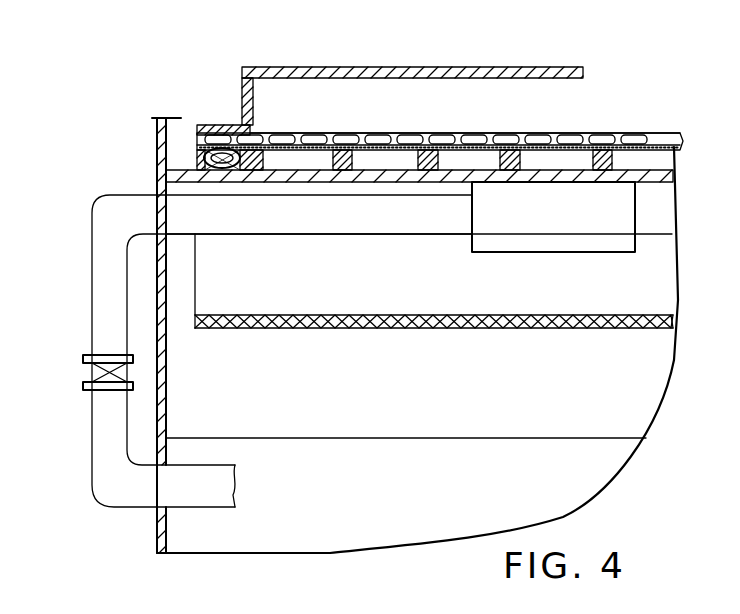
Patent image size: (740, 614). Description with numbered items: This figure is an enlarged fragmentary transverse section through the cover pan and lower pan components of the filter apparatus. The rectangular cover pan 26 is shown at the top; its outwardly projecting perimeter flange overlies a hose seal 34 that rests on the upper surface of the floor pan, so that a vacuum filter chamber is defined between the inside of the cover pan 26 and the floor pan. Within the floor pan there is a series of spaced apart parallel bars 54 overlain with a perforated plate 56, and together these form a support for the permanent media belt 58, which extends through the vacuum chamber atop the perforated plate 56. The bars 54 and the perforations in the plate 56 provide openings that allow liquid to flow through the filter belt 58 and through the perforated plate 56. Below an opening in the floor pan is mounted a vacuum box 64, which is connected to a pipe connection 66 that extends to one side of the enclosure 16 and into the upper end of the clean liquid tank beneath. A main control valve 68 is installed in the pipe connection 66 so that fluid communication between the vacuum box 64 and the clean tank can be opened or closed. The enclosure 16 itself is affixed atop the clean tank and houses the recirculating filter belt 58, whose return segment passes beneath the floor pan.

The enclosure 16 is at (157, 527).
The cover pan 26 is at (358, 66).
The hose seal 34 is at (212, 135).
The spaced apart parallel bars 54 is at (362, 158).
The perforated plate 56 is at (508, 145).
The permanent media belt 58 is at (405, 133).
The vacuum box 64 is at (537, 244).
The pipe connection 66 is at (252, 225).
The main control valve 68 is at (87, 355).